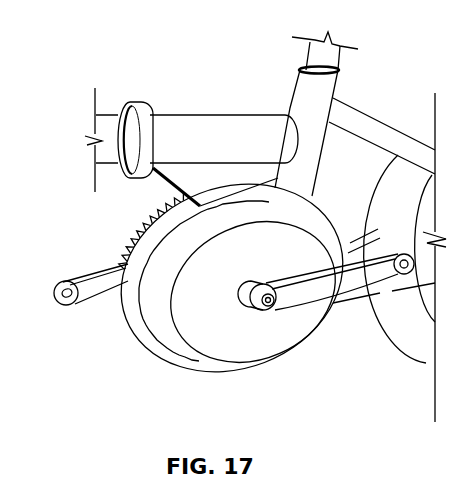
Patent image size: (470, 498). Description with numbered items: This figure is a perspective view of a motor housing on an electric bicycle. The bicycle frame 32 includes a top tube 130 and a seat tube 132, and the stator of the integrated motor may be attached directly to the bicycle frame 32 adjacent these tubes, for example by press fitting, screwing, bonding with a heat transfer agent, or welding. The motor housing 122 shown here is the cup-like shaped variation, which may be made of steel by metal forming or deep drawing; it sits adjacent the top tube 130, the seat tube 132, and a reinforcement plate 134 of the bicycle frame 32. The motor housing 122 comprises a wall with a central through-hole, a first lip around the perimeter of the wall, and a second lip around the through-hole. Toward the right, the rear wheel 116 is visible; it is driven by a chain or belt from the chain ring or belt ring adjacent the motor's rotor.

The top tube 130 is at (102, 121).
The seat tube 132 is at (311, 55).
The reinforcement plate 134 is at (214, 173).
The bicycle frame 32 is at (337, 72).
The rear wheel 116 is at (427, 138).
The motor housing 122 is at (267, 334).